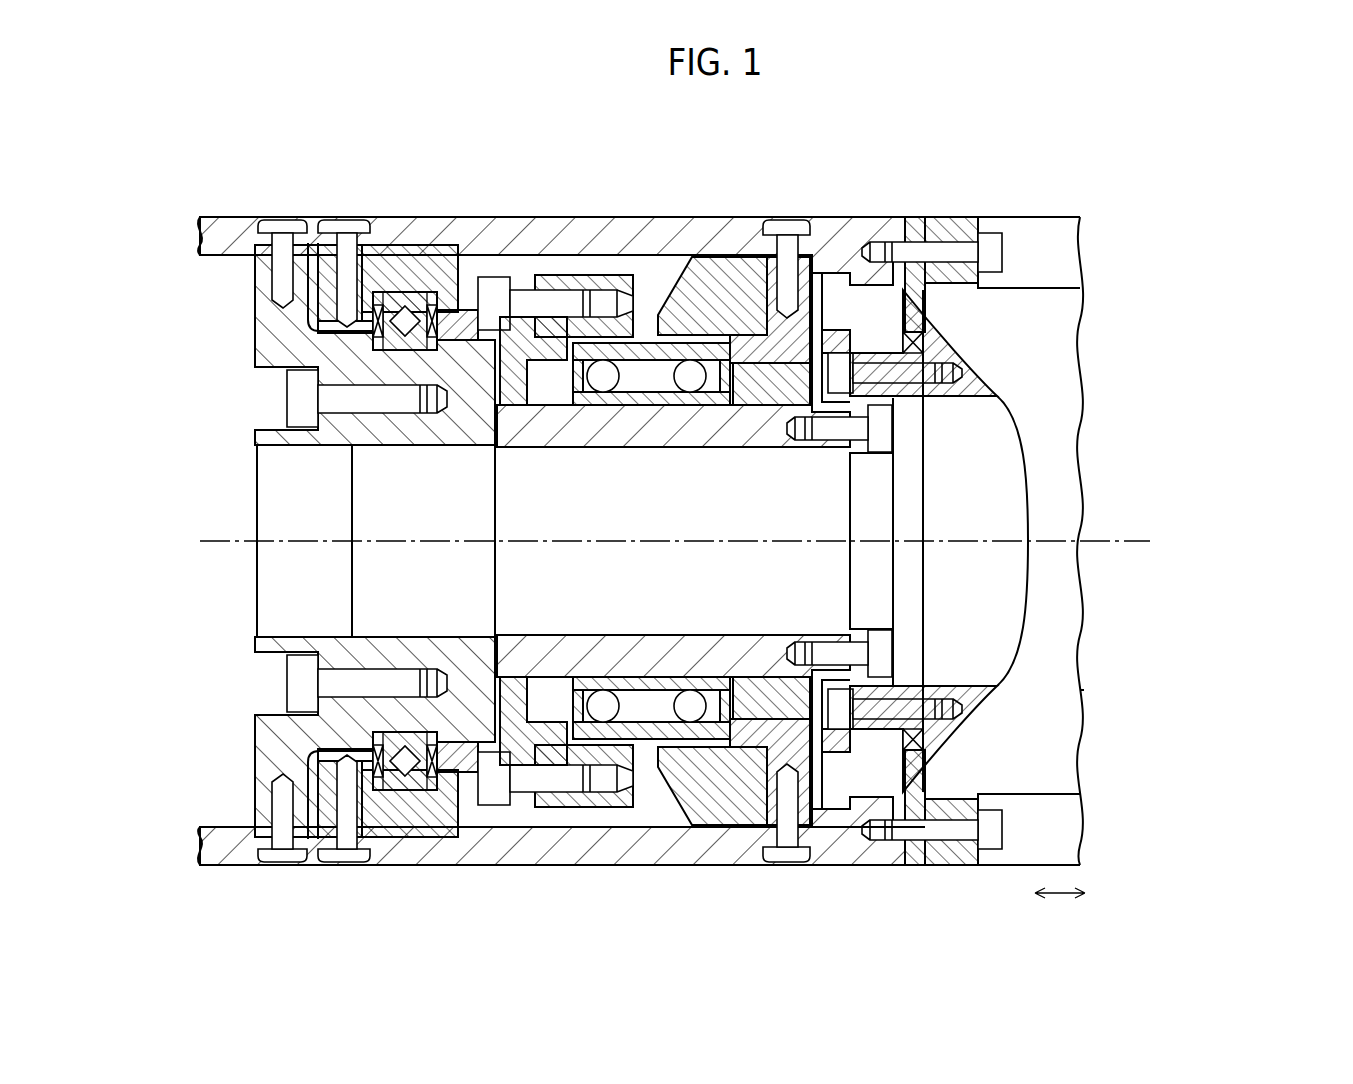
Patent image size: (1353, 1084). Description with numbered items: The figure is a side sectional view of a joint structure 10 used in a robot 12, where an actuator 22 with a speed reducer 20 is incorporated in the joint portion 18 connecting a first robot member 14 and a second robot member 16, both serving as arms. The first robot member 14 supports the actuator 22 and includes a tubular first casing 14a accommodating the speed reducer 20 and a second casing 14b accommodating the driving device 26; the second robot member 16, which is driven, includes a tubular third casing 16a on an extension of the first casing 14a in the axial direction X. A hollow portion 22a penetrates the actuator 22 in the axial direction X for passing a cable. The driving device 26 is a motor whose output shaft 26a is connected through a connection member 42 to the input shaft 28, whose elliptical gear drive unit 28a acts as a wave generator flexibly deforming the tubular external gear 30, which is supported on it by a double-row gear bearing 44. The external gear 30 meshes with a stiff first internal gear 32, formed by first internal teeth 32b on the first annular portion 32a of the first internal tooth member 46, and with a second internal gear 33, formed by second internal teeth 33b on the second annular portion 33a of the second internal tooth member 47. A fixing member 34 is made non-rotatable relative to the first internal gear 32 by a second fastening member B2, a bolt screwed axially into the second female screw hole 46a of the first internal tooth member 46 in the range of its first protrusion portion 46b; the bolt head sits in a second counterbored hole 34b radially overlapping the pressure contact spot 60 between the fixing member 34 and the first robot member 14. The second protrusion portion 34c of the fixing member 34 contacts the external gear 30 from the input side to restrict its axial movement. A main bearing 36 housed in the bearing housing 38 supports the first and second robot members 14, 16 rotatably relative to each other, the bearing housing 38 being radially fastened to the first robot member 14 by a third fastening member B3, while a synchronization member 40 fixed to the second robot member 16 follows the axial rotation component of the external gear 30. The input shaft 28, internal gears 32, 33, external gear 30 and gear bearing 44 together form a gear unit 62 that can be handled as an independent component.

The joint structure 10 is at (972, 158).
The robot 12 is at (1050, 193).
The first robot member 14 is at (928, 889).
The first casing 14a is at (790, 855).
The second casing 14b is at (1095, 692).
The second robot member 16 is at (237, 896).
The third casing 16a is at (228, 235).
The joint portion 18 is at (197, 368).
The speed reducer 20 is at (647, 863).
The actuator 22 is at (1119, 423).
The hollow portion 22a is at (275, 518).
The driving device 26 is at (987, 416).
The output shaft 26a is at (965, 695).
The input shaft 28 is at (770, 410).
The gear drive unit 28a is at (645, 385).
The external gear 30 is at (653, 757).
The first internal gear 32 is at (690, 710).
The first annular portion 32a is at (705, 300).
The first internal teeth 32b is at (708, 405).
The second internal gear 33 is at (598, 710).
The second annular portion 33a is at (640, 290).
The second internal teeth 33b is at (600, 398).
The fixing member 34 is at (808, 310).
The second counterbored hole 34b is at (832, 820).
The second protrusion portion 34c is at (745, 690).
The main bearing 36 is at (380, 243).
The bearing housing 38 is at (452, 245).
The synchronization member 40 is at (243, 316).
The connection member 42 is at (848, 750).
The gear bearing 44 is at (640, 725).
The first internal tooth member 46 is at (748, 240).
The second female screw hole 46a is at (735, 805).
The first protrusion portion 46b is at (745, 727).
The second internal tooth member 47 is at (557, 283).
The pressure contact spot 60 is at (812, 252).
The gear unit 62 is at (573, 820).
The second fastening member B2 is at (850, 830).
The third fastening member B3 is at (345, 218).
The axial direction X is at (1060, 925).